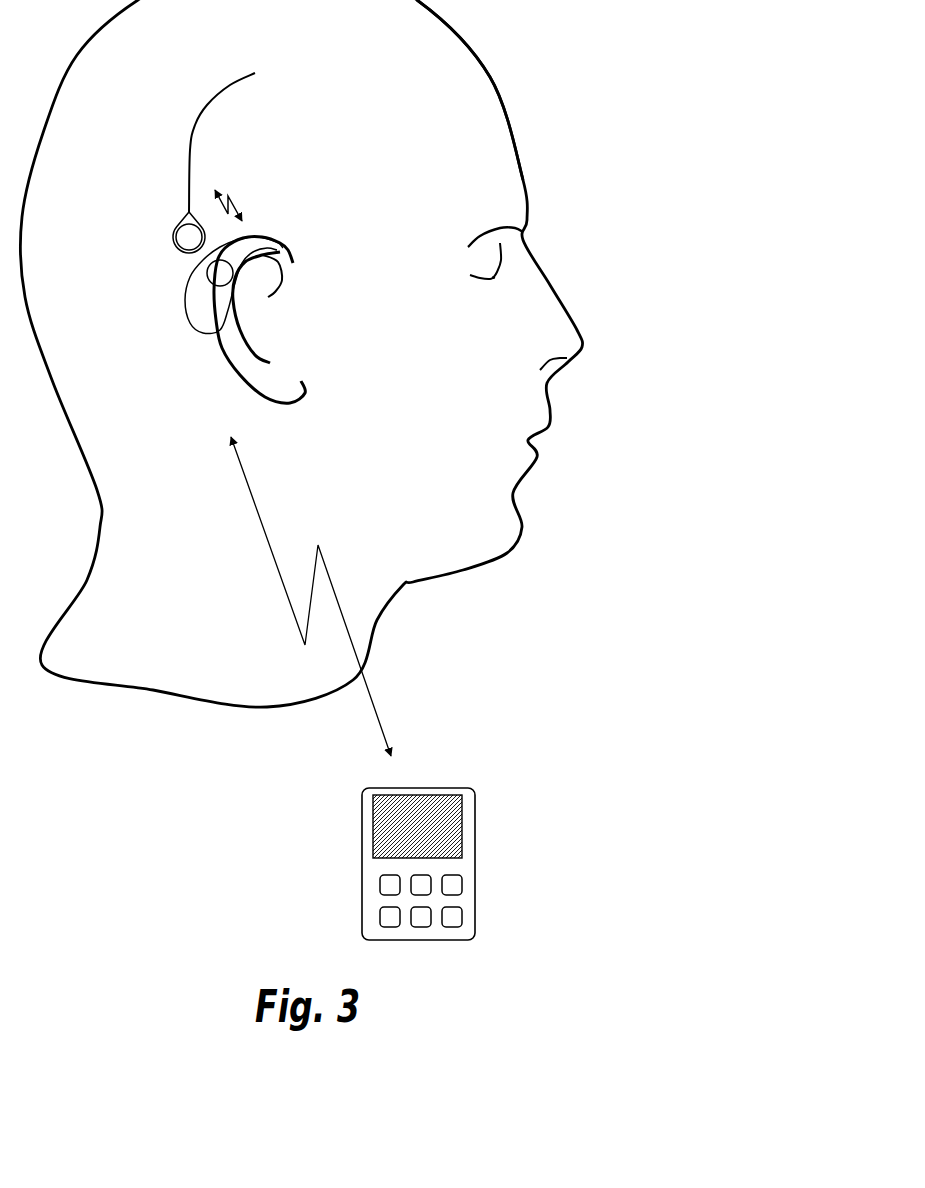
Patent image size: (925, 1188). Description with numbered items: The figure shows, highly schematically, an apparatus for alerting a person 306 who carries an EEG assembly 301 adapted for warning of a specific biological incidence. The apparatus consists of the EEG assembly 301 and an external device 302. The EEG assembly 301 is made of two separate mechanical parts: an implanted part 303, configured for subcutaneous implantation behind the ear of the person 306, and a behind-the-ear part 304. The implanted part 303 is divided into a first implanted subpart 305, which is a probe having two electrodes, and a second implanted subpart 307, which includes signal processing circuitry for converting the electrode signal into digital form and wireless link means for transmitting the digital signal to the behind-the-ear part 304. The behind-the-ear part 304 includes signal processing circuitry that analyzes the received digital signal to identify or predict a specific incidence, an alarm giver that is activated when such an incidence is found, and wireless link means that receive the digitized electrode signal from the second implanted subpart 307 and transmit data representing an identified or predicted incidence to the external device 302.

The EEG assembly 301 is at (326, 166).
The external device 302 is at (473, 842).
The implanted part 303 is at (169, 215).
The behind-the-ear part 304 is at (154, 305).
The first implanted subpart 305 is at (195, 127).
The person 306 is at (516, 50).
The second implanted subpart 307 is at (174, 243).